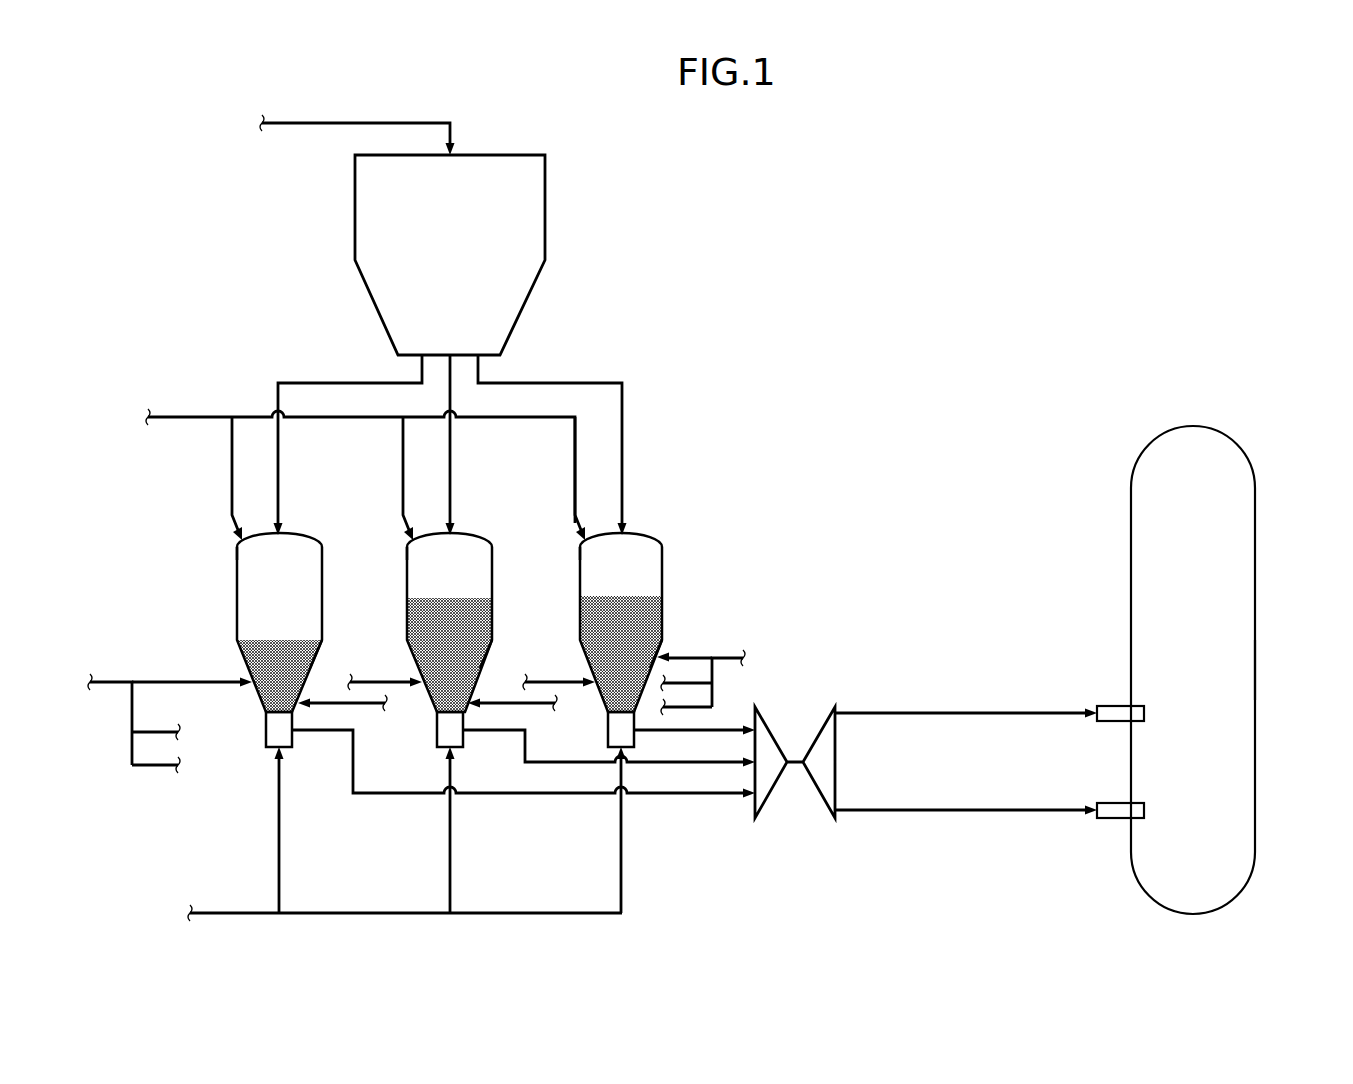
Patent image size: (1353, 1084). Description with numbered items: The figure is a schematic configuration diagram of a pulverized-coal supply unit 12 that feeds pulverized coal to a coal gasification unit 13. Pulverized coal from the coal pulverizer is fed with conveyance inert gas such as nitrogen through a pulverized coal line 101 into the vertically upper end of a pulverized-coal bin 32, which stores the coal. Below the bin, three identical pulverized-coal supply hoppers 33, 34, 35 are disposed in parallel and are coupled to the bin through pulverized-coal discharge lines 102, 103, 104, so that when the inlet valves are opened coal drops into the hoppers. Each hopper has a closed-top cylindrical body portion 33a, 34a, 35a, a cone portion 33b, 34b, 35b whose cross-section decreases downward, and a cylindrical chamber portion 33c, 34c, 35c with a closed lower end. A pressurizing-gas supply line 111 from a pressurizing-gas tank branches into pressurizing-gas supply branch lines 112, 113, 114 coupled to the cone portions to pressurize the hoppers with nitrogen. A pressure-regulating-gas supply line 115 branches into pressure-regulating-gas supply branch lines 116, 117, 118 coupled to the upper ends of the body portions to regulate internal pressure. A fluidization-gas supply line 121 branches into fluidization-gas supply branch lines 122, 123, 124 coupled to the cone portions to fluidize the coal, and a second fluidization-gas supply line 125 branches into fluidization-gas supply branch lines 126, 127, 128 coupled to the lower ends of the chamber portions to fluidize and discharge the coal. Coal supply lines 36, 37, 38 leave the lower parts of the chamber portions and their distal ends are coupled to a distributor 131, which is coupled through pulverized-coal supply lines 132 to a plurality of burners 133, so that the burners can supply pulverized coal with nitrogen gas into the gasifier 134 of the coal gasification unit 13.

The pulverized-coal supply unit 12 is at (707, 175).
The coal gasification unit 13 is at (1212, 412).
The pulverized-coal bin 32 is at (545, 155).
The pulverized-coal supply hopper 33 is at (225, 603).
The body portion 33a is at (237, 550).
The cone portion 33b is at (318, 655).
The chamber portion 33c is at (266, 740).
The pulverized-coal supply hopper 34 is at (497, 568).
The body portion 34a is at (407, 550).
The cone portion 34b is at (489, 655).
The chamber portion 34c is at (437, 740).
The pulverized-coal supply hopper 35 is at (675, 575).
The body portion 35a is at (580, 550).
The cone portion 35b is at (660, 645).
The chamber portion 35c is at (608, 740).
The coal supply line 36 is at (700, 796).
The coal supply line 37 is at (735, 766).
The coal supply line 38 is at (703, 730).
The pulverized coal line 101 is at (445, 123).
The pulverized-coal discharge line 102 is at (300, 383).
The pulverized-coal discharge line 103 is at (450, 393).
The pulverized-coal discharge line 104 is at (622, 400).
The pressurizing-gas supply line 111 is at (110, 682).
The pressurizing-gas supply branch line 112 is at (160, 682).
The pressurizing-gas supply branch line 113 is at (152, 732).
The pressurizing-gas supply branch line 114 is at (160, 766).
The pressure-regulating-gas supply line 115 is at (160, 417).
The pressure-regulating-gas supply branch line 116 is at (232, 432).
The pressure-regulating-gas supply branch line 117 is at (403, 430).
The pressure-regulating-gas supply branch line 118 is at (575, 432).
The fluidization-gas supply line 121 is at (740, 658).
The fluidization-gas supply branch line 122 is at (700, 658).
The fluidization-gas supply branch line 123 is at (540, 705).
The fluidization-gas supply branch line 124 is at (372, 705).
The fluidization-gas supply line 125 is at (225, 913).
The fluidization-gas supply branch line 126 is at (279, 868).
The fluidization-gas supply branch line 127 is at (450, 868).
The fluidization-gas supply branch line 128 is at (621, 878).
The distributor 131 is at (772, 778).
The pulverized-coal supply line 132 is at (1033, 712).
The burner 133 is at (1105, 706).
The gasifier 134 is at (1255, 660).